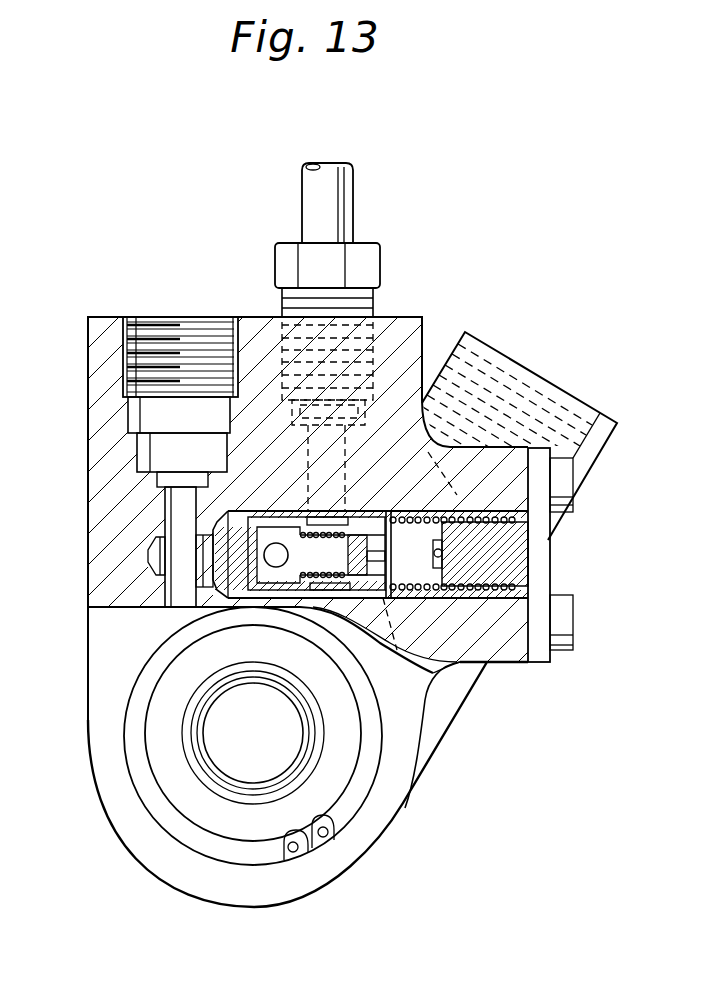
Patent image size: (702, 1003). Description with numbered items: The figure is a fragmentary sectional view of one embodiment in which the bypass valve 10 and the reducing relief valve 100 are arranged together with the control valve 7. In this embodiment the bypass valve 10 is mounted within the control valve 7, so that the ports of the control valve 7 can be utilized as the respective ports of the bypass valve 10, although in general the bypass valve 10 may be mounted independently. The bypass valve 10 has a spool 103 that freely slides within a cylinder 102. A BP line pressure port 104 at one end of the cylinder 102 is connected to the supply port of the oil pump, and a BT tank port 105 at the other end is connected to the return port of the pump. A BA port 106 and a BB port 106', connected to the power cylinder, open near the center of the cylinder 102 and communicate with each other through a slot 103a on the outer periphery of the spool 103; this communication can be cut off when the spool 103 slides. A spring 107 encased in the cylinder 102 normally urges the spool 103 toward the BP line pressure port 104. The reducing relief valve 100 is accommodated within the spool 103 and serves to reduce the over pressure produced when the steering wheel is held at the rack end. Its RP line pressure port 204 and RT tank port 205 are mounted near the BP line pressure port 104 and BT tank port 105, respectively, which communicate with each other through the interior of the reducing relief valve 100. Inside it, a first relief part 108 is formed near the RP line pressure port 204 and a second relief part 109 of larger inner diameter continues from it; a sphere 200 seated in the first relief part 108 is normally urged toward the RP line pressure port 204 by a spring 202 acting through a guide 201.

The control valve 7 is at (68, 337).
The bypass valve 10 is at (230, 427).
The reducing relief valve 100 is at (265, 610).
The cylinder 102 is at (276, 493).
The spool 103 is at (267, 505).
The slot 103a is at (316, 607).
The BP line pressure port 104 is at (230, 530).
The BT tank port 105 is at (438, 448).
The BA port 106 is at (382, 468).
The BB port 106' is at (385, 648).
The spring 107 is at (461, 599).
The first relief part 108 is at (213, 550).
The second relief part 109 is at (382, 512).
The sphere 200 is at (122, 608).
The guide 201 is at (434, 550).
The spring 202 is at (283, 570).
The RP line pressure port 204 is at (257, 556).
The RT tank port 205 is at (459, 665).